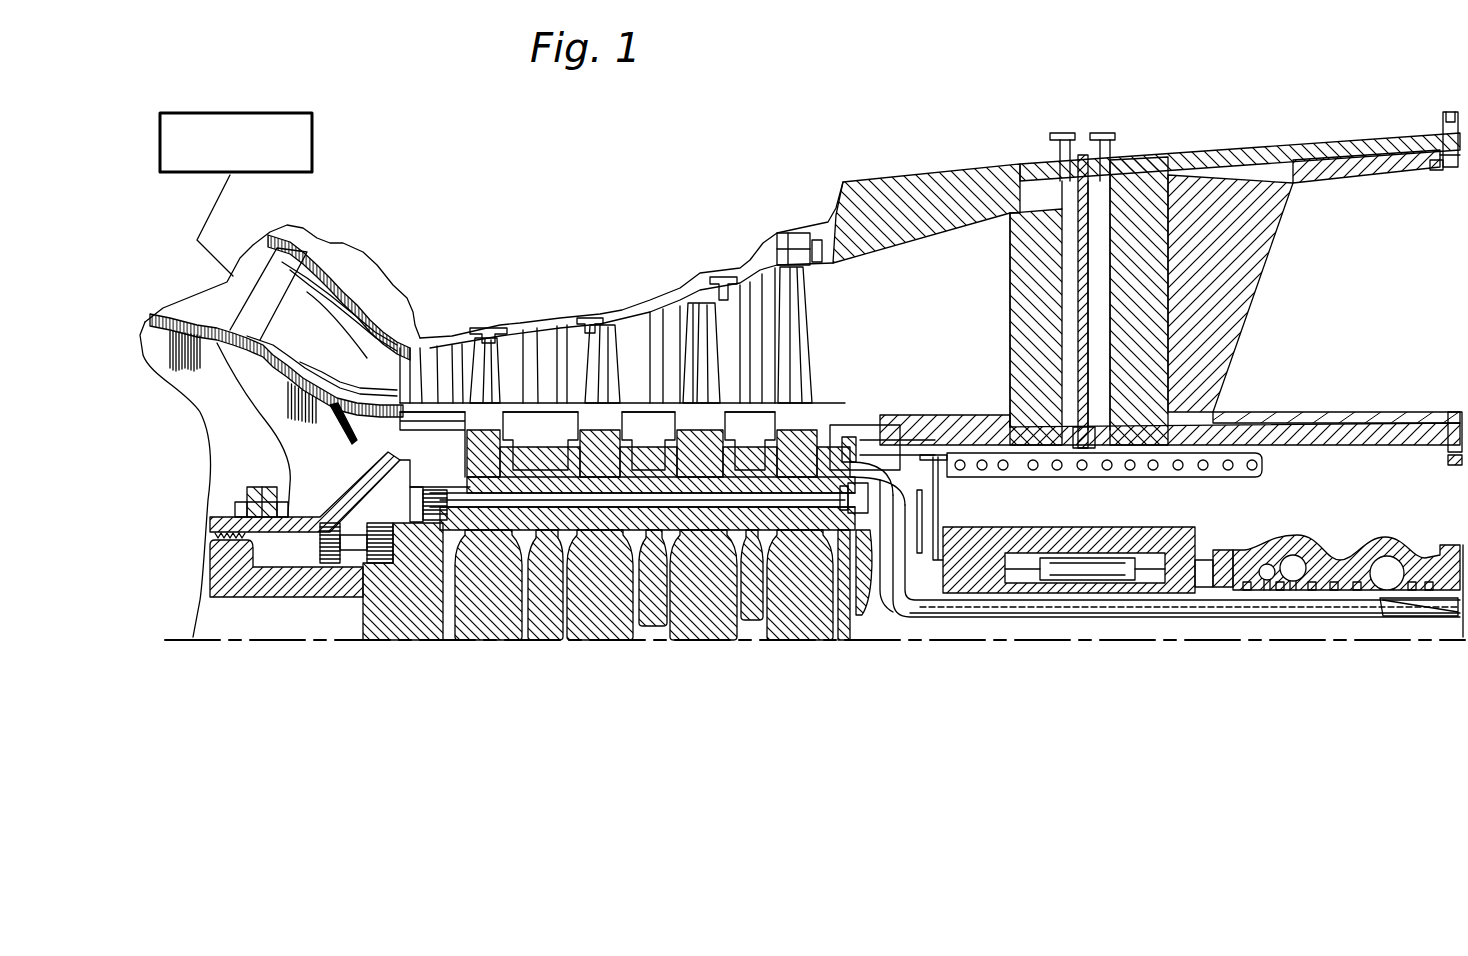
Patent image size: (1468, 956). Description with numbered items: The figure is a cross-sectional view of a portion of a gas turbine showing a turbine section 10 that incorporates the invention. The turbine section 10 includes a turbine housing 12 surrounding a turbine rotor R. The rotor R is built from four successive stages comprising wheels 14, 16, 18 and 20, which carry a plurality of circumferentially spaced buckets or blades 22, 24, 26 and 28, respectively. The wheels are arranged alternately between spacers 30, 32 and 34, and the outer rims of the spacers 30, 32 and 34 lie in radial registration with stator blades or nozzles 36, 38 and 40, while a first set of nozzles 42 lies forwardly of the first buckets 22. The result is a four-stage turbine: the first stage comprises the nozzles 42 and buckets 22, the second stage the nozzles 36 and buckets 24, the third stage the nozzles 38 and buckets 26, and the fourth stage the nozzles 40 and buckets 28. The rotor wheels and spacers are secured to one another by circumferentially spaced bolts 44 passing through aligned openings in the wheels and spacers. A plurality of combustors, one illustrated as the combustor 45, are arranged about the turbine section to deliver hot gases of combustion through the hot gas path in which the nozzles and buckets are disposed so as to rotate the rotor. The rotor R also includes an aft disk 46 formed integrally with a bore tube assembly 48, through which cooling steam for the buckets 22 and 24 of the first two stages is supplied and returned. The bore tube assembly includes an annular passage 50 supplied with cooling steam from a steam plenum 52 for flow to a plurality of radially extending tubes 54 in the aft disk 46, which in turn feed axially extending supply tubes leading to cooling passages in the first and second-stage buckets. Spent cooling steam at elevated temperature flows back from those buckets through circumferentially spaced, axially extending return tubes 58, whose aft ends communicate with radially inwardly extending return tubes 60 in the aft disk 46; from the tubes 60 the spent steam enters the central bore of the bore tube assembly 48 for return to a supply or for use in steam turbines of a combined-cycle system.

The turbine section 10 is at (569, 226).
The turbine housing 12 is at (883, 203).
The wheel 14 is at (490, 617).
The wheel 16 is at (597, 610).
The wheel 18 is at (702, 613).
The wheel 20 is at (798, 610).
The buckets 22 is at (477, 373).
The buckets 24 is at (597, 347).
The buckets 26 is at (690, 308).
The buckets 28 is at (790, 258).
The spacer 30 is at (543, 593).
The spacer 32 is at (648, 600).
The spacer 34 is at (750, 593).
The nozzles 36 is at (547, 357).
The nozzles 38 is at (652, 347).
The nozzles 40 is at (750, 300).
The nozzles 42 is at (437, 370).
The bolts 44 is at (472, 463).
The combustor 45 is at (262, 111).
The aft disk 46 is at (850, 597).
The bore tube assembly 48 is at (1188, 650).
The annular passage 50 is at (1063, 607).
The steam plenum 52 is at (1388, 565).
The radially extending tubes 54 is at (905, 517).
The return tubes 58 is at (801, 473).
The return tubes 60 is at (887, 597).
The turbine rotor R is at (676, 697).